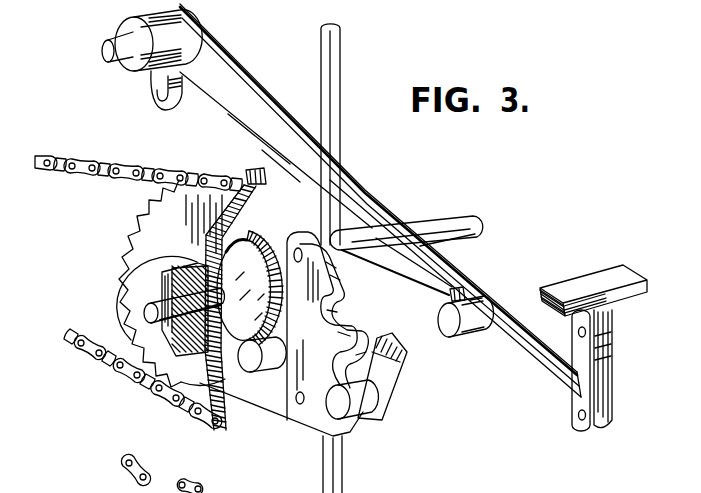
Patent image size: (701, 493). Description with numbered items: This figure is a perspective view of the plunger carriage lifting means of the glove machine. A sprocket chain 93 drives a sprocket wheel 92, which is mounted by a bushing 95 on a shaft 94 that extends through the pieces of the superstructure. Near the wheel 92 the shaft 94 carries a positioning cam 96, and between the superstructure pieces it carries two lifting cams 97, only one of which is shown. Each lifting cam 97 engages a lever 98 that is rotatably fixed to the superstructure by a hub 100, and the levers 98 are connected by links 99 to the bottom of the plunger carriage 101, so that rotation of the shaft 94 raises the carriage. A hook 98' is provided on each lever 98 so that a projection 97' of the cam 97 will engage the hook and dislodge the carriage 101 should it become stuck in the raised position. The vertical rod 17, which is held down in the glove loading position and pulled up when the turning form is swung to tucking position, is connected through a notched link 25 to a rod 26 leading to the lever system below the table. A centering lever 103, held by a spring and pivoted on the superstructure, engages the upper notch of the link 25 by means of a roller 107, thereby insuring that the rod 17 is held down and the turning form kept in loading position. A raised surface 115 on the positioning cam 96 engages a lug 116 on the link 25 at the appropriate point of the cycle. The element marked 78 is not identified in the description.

The rod 17 is at (341, 77).
The notched link 25 is at (303, 424).
The rod 26 is at (344, 478).
The shaft stub 78 is at (123, 63).
The sprocket wheel 92 is at (158, 221).
The sprocket chain 93 is at (117, 186).
The shaft 94 is at (145, 313).
The bushing 95 is at (143, 287).
The positioning cam 96 is at (240, 256).
The lifting cam 97 is at (456, 323).
The projection 97' is at (468, 336).
The lever 98 is at (380, 202).
The hook 98' is at (140, 102).
The link 99 is at (578, 416).
The hub 100 is at (118, 26).
The plunger carriage 101 is at (592, 285).
The centering lever 103 is at (392, 390).
The roller 107 is at (364, 420).
The raised surface 115 is at (240, 230).
The lug 116 is at (253, 374).